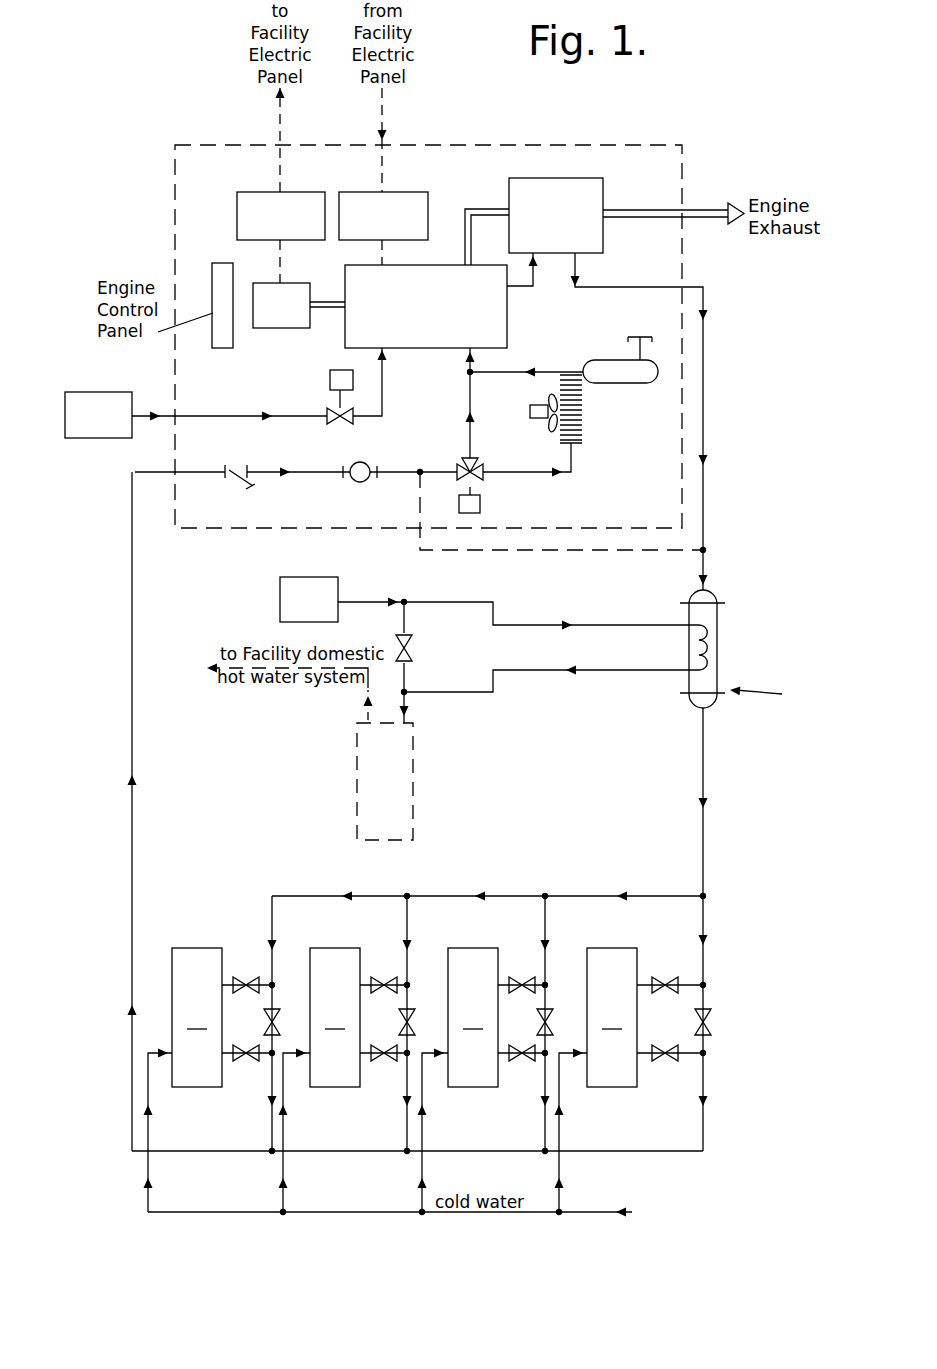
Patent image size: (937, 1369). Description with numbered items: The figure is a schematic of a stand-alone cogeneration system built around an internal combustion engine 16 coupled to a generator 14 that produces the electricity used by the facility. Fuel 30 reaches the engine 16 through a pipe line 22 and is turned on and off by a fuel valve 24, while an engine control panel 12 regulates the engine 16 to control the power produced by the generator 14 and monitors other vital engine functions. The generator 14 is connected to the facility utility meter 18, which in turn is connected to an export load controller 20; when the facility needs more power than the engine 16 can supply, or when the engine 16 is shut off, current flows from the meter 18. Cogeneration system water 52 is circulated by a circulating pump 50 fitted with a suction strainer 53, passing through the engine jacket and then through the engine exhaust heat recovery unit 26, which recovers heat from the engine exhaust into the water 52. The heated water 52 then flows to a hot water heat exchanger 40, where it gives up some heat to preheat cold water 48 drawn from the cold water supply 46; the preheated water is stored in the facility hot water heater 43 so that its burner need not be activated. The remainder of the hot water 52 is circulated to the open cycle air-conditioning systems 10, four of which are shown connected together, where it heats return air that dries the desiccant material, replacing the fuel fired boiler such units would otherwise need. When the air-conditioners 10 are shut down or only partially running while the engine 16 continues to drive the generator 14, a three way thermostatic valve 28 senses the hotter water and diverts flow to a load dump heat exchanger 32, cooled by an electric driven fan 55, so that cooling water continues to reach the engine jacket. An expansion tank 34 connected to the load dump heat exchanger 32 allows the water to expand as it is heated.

The open cycle air-conditioning system 10 is at (586, 1103).
The engine control panel 12 is at (229, 342).
The generator 14 is at (307, 328).
The internal combustion engine 16 is at (507, 349).
The facility utility meter 18 is at (237, 194).
The export load controller 20 is at (428, 198).
The pipe line 22 is at (208, 421).
The fuel valve 24 is at (345, 425).
The engine exhaust heat recovery unit 26 is at (598, 247).
The three way thermostatic valve 28 is at (477, 463).
The fuel 30 is at (66, 392).
The load dump heat exchanger 32 is at (580, 437).
The expansion tank 34 is at (645, 383).
The hot water heat exchanger 40 is at (717, 693).
The facility hot water heater 43 is at (408, 806).
The cold water supply 46 is at (280, 600).
The cold water 48 is at (520, 625).
The circulating pump 50 is at (355, 480).
The cogeneration system water 52 is at (401, 478).
The suction strainer 53 is at (238, 478).
The electric driven fan 55 is at (540, 419).